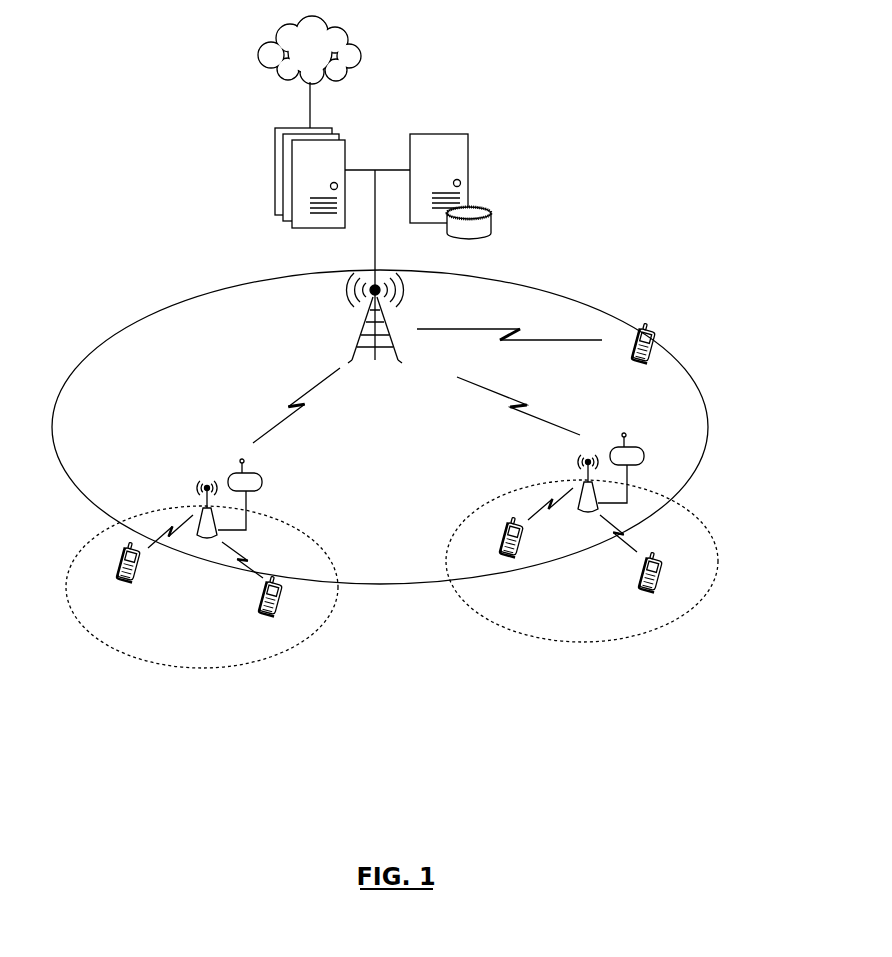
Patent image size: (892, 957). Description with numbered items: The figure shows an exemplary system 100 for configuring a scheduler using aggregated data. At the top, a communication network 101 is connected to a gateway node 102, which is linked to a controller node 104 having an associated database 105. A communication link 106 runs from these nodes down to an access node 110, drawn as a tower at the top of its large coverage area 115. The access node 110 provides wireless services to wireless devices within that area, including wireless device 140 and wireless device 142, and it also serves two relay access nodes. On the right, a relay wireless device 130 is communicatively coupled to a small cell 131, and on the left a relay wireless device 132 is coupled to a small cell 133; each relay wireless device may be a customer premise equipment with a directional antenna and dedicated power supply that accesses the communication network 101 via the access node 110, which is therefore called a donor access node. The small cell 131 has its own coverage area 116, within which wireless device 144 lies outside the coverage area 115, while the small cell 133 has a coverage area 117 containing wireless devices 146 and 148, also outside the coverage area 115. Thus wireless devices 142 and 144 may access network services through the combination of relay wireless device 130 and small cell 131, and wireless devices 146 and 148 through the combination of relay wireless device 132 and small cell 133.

The system 100 is at (405, 80).
The communication network 101 is at (293, 63).
The gateway node 102 is at (275, 143).
The controller node 104 is at (468, 153).
The database 105 is at (491, 211).
The communication link 106 is at (375, 240).
The access node 110 is at (377, 364).
The coverage area 115 is at (680, 347).
The coverage area 116 is at (713, 582).
The coverage area 117 is at (332, 608).
The relay wireless device 130 is at (633, 447).
The small cell 131 is at (583, 482).
The relay wireless device 132 is at (252, 473).
The small cell 133 is at (202, 508).
The wireless device 140 is at (632, 351).
The wireless device 142 is at (540, 560).
The wireless device 144 is at (645, 588).
The wireless device 146 is at (158, 585).
The wireless device 148 is at (265, 615).